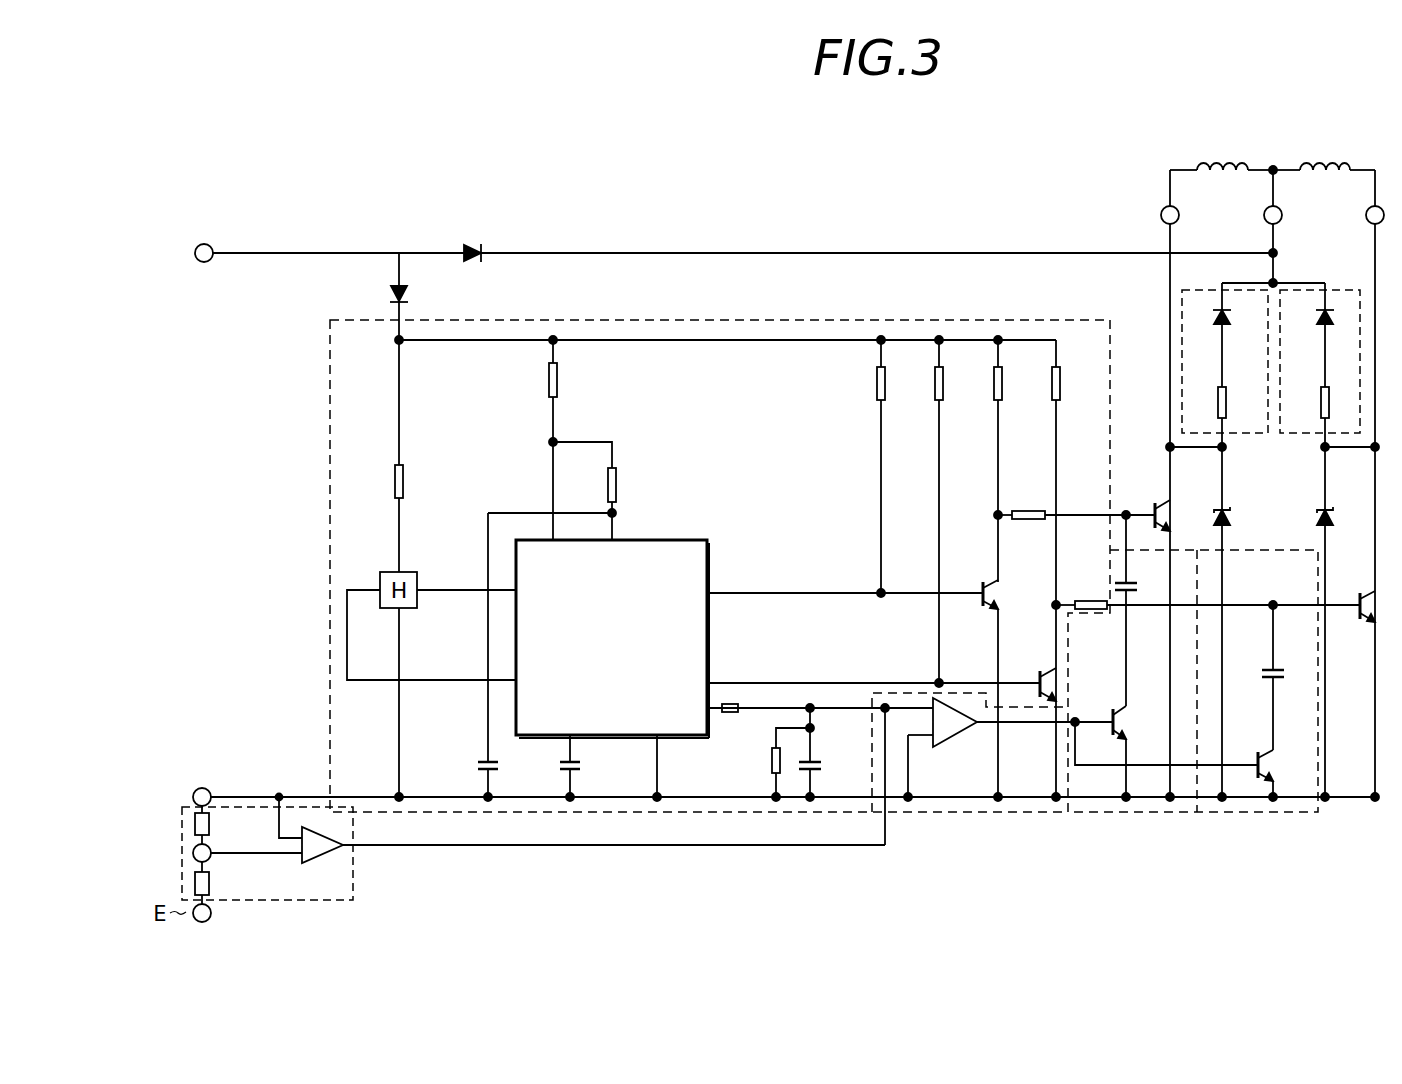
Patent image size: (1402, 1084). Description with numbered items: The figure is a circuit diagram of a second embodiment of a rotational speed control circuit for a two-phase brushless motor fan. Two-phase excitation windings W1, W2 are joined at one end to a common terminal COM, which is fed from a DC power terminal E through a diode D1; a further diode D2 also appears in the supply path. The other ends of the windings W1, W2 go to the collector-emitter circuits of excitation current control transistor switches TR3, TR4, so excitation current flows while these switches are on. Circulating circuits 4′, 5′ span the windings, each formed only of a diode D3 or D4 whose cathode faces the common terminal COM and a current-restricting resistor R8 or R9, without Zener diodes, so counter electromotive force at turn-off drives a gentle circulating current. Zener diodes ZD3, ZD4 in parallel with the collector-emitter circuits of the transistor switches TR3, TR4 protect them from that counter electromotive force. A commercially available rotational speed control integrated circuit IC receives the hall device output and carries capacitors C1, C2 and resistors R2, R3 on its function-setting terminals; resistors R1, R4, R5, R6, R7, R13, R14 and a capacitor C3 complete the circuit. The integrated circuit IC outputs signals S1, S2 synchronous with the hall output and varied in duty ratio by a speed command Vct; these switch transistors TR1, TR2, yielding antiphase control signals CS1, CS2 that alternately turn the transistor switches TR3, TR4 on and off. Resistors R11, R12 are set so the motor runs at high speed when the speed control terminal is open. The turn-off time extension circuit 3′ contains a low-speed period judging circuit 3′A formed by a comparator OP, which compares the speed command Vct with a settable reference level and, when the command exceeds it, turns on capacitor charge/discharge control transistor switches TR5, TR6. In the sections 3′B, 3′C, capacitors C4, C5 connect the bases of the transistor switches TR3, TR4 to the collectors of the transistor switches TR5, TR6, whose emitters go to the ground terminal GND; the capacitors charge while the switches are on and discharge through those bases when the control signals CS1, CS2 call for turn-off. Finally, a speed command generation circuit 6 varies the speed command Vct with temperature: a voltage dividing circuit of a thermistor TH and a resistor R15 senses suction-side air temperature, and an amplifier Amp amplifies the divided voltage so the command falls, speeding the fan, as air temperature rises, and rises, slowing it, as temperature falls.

The DC power terminal E is at (204, 245).
The diode D1 is at (473, 245).
The diode D2 is at (408, 299).
The resistor R1 is at (404, 483).
The resistor R2 is at (558, 378).
The resistor R3 is at (607, 485).
The rotational speed control integrated circuit IC is at (710, 544).
The signal S1 is at (845, 580).
The signal S2 is at (873, 669).
The resistor R4 is at (886, 378).
The resistor R5 is at (944, 378).
The resistor R6 is at (1003, 378).
The resistor R7 is at (1061, 378).
The resistor R11 is at (730, 713).
The resistor R12 is at (771, 762).
The resistor R13 is at (1026, 511).
The resistor R14 is at (1086, 600).
The capacitor C1 is at (576, 758).
The capacitor C2 is at (495, 758).
The capacitor C3 is at (820, 760).
The capacitor C4 is at (1138, 582).
The capacitor C5 is at (1285, 669).
The control signal CS1 is at (1100, 505).
The control signal CS2 is at (1233, 592).
The transistor TR1 is at (983, 589).
The transistor TR2 is at (1038, 671).
The excitation current control transistor switch TR3 is at (1159, 505).
The excitation current control transistor switch TR4 is at (1365, 595).
The capacitor charge/discharge control transistor switch TR5 is at (1116, 705).
The capacitor charge/discharge control transistor switch TR6 is at (1263, 748).
The Zener diode ZD3 is at (1232, 518).
The Zener diode ZD4 is at (1315, 518).
The diode D3 is at (1232, 318).
The diode D4 is at (1315, 318).
The resistor R8 is at (1227, 410).
The resistor R9 is at (1319, 410).
The excitation winding W1 is at (1218, 165).
The excitation winding W2 is at (1319, 165).
The common terminal COM is at (1301, 236).
The circulating circuit 4′ is at (1212, 288).
The circulating circuit 5′ is at (1345, 288).
The speed command Vct is at (906, 776).
The comparator OP is at (955, 740).
The ground terminal GND is at (202, 786).
The thermistor TH is at (210, 826).
The resistor R15 is at (210, 885).
The amplifier Amp is at (330, 834).
The speed command generation circuit 6 is at (354, 876).
The turn-off time extension circuit 3′ is at (1018, 812).
The low-speed period judging circuit 3′A is at (949, 812).
The drive section 3′B is at (1100, 812).
The drive section 3′C is at (1302, 812).